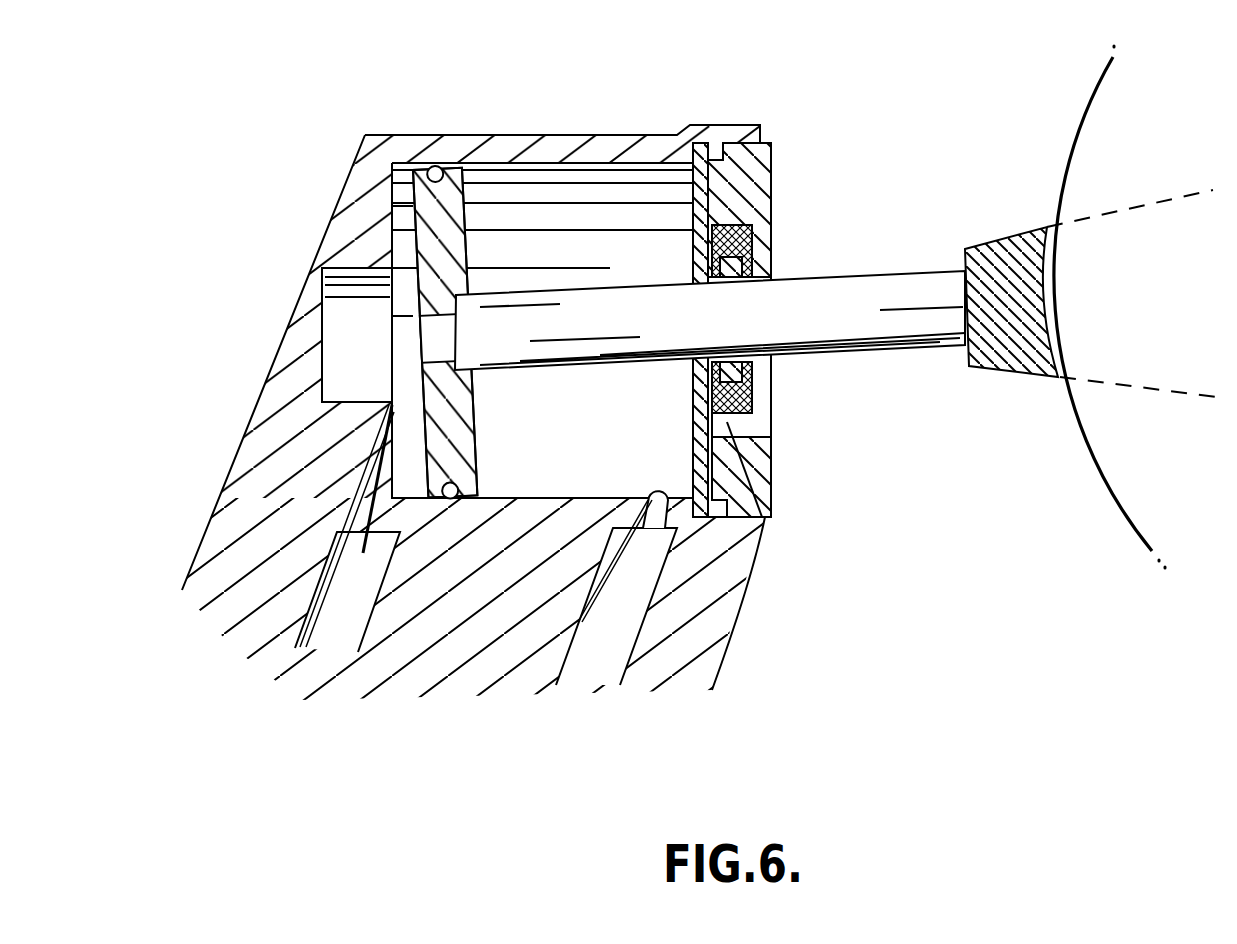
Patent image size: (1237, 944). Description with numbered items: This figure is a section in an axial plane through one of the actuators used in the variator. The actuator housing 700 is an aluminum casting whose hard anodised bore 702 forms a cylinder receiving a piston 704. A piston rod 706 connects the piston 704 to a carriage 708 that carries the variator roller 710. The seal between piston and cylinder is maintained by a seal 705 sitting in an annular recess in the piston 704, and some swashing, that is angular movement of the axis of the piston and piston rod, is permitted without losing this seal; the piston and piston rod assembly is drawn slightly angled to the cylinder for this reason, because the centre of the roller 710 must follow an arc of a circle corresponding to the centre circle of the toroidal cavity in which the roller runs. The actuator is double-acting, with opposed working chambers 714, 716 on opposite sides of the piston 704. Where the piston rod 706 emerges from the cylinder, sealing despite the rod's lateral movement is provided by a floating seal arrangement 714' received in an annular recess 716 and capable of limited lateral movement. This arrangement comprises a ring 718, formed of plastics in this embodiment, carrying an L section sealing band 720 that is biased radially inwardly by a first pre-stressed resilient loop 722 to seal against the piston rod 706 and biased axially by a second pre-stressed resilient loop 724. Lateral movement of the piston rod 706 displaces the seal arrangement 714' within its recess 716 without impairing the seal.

The actuator housing 700 is at (485, 588).
The bore 702 is at (503, 498).
The piston 704 is at (465, 220).
The seal 705 is at (433, 168).
The piston rod 706 is at (563, 312).
The carriage 708 is at (1006, 283).
The variator roller 710 is at (1143, 438).
The working chamber 714 is at (293, 292).
The floating seal arrangement 714' is at (806, 449).
The working chamber / annular recess 716 is at (733, 220).
The ring 718 is at (772, 458).
The L section sealing band 720 is at (772, 386).
The first pre-stressed resilient loop 722 is at (740, 283).
The second pre-stressed resilient loop 724 is at (750, 247).